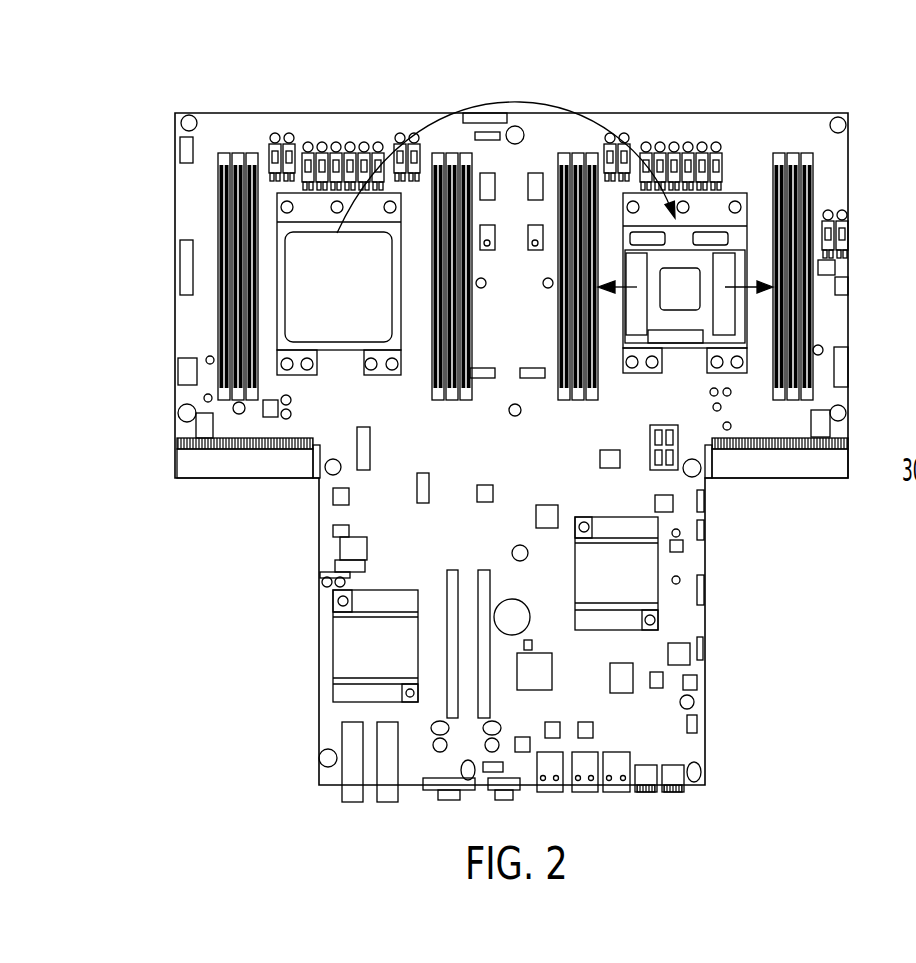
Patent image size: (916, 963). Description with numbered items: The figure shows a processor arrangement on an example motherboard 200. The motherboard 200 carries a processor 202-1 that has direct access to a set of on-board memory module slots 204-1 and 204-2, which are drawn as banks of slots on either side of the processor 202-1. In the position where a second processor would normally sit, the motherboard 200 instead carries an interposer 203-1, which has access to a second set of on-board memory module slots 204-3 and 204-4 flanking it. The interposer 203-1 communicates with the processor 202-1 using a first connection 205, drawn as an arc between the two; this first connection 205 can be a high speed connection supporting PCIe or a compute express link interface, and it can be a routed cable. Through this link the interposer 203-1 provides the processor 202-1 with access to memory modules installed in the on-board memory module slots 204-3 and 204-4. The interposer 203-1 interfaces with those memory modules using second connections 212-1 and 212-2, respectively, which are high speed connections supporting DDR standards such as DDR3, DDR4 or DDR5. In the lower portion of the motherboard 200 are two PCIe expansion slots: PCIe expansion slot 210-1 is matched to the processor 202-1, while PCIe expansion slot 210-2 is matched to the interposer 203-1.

The motherboard 200 is at (140, 102).
The processor 202-1 is at (313, 325).
The interposer 203-1 is at (710, 257).
The on-board memory module slot 204-1 is at (217, 325).
The on-board memory module slot 204-2 is at (447, 372).
The on-board memory module slot 204-3 is at (590, 368).
The on-board memory module slot 204-4 is at (797, 313).
The first connection 205 is at (525, 103).
The PCIe expansion slot 210-1 is at (450, 645).
The PCIe expansion slot 210-2 is at (483, 683).
The second connection 212-1 is at (608, 280).
The second connection 212-2 is at (768, 280).